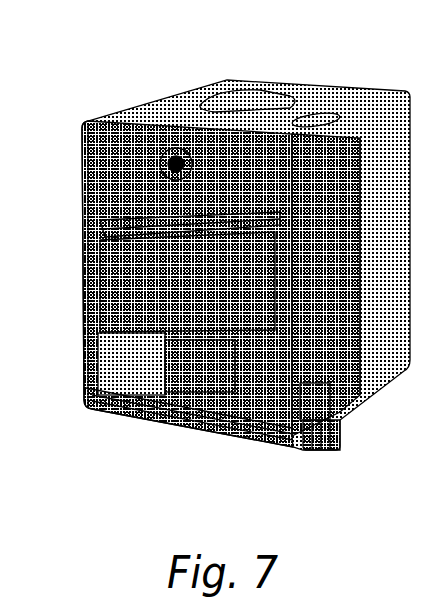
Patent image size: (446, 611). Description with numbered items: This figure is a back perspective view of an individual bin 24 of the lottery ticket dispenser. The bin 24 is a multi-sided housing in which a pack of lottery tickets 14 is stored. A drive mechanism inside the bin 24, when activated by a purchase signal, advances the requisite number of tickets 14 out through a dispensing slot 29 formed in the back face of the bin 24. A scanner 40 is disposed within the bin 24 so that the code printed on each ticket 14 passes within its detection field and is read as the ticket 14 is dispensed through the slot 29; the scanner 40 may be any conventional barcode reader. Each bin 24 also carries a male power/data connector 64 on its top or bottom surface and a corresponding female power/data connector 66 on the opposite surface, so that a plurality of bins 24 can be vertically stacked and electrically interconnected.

The bin 24 is at (267, 92).
The female power/data connector 66 is at (322, 117).
The dispensing slot 29 is at (110, 235).
The lottery tickets 14 is at (110, 287).
The scanner 40 is at (192, 382).
The male power/data connector 64 is at (328, 445).